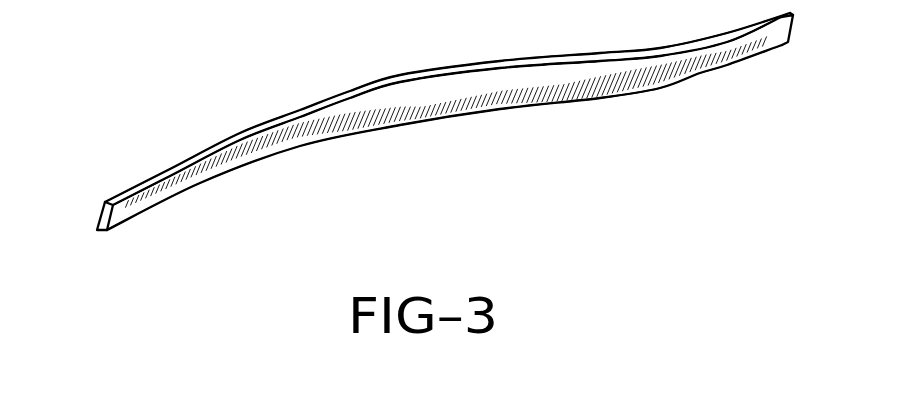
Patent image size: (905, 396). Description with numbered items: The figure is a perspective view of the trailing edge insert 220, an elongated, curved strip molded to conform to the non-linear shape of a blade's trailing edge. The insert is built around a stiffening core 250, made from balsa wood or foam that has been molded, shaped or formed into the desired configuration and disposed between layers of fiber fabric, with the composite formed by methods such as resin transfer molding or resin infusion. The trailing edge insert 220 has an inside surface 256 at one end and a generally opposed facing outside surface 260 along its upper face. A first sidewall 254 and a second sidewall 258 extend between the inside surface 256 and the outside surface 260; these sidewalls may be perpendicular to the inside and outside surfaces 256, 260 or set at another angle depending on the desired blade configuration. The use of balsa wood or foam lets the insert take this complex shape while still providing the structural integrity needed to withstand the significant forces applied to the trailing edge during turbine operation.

The trailing edge insert 220 is at (407, 140).
The stiffening core 250 is at (560, 80).
The first sidewall 254 is at (197, 186).
The inside surface 256 is at (98, 210).
The second sidewall 258 is at (358, 87).
The outside surface 260 is at (465, 92).